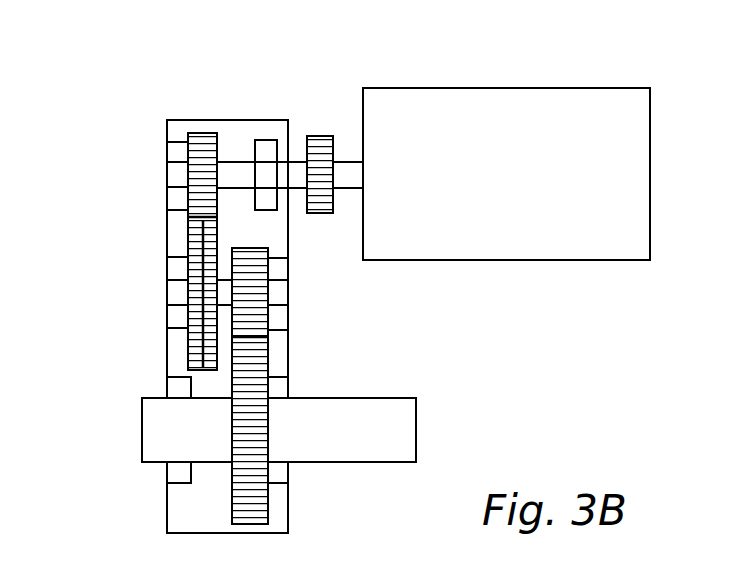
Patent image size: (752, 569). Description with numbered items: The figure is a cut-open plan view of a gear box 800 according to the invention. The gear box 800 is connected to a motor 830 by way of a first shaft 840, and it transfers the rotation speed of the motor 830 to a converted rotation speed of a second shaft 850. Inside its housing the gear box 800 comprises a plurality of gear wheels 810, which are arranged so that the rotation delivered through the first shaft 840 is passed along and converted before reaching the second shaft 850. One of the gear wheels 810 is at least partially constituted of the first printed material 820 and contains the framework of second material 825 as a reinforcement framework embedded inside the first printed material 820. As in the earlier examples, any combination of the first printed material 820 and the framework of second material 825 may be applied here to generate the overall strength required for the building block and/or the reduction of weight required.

The gear box 800 is at (135, 130).
The gear wheels 810 is at (203, 117).
The first printed material 820 is at (193, 242).
The framework of second material 825 is at (193, 337).
The motor 830 is at (505, 122).
The first shaft 840 is at (267, 178).
The second shaft 850 is at (364, 420).